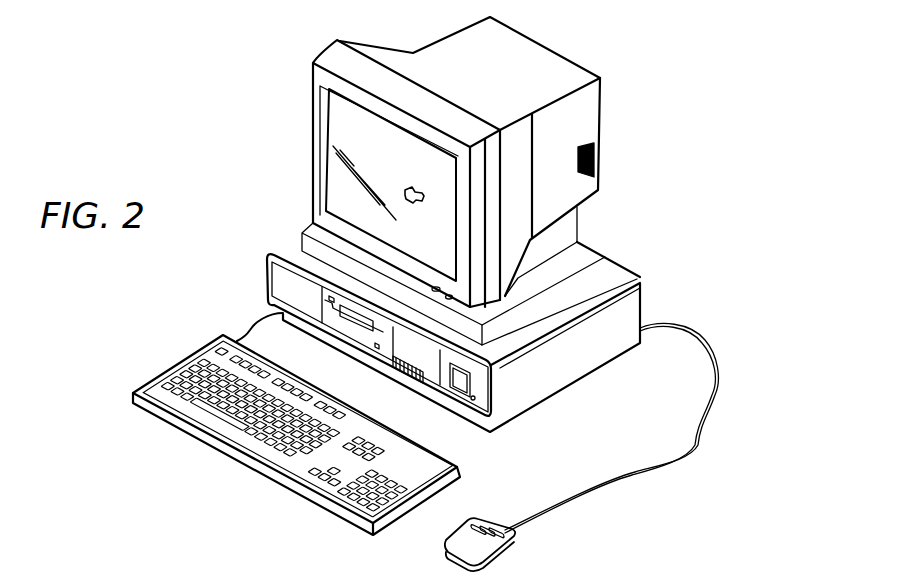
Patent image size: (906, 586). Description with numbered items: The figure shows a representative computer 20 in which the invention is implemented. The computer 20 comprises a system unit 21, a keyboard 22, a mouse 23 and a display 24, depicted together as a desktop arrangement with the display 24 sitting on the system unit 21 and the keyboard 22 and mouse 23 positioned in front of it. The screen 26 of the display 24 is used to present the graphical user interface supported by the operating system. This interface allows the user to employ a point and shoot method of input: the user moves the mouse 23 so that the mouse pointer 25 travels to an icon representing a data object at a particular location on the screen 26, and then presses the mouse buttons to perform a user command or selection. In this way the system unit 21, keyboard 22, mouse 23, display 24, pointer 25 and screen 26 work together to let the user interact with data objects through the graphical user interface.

The computer 20 is at (259, 203).
The system unit 21 is at (266, 272).
The keyboard 22 is at (162, 385).
The mouse 23 is at (490, 522).
The display 24 is at (313, 112).
The mouse pointer 25 is at (408, 187).
The screen 26 is at (446, 244).